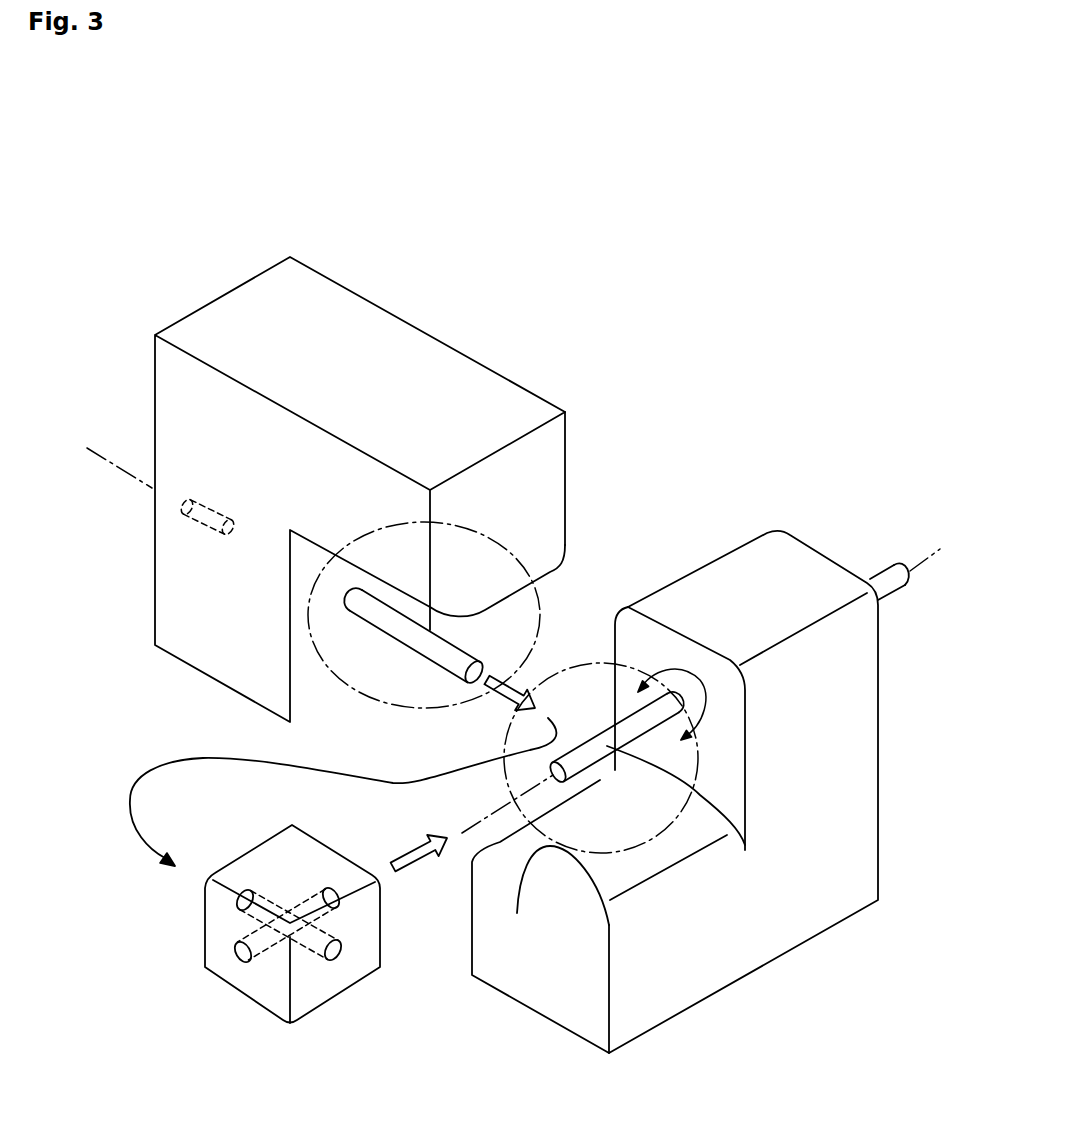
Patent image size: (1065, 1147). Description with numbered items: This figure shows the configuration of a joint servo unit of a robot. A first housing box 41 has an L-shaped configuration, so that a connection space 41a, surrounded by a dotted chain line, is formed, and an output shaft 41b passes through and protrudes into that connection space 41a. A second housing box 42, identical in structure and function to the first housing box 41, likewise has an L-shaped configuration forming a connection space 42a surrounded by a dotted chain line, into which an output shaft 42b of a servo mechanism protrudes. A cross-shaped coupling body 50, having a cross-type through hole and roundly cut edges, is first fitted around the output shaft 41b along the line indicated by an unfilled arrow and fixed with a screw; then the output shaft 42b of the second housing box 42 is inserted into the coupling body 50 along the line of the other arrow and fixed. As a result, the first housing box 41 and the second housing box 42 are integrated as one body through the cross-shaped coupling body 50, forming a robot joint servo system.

The first housing box 41 is at (755, 583).
The connection space 41a is at (517, 913).
The output shaft 41b is at (610, 744).
The second housing box 42 is at (465, 387).
The connection space 42a is at (377, 707).
The output shaft 42b is at (447, 657).
The cross-shaped coupling body 50 is at (267, 983).